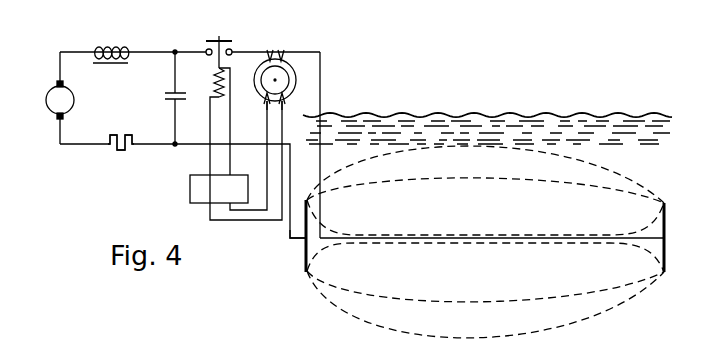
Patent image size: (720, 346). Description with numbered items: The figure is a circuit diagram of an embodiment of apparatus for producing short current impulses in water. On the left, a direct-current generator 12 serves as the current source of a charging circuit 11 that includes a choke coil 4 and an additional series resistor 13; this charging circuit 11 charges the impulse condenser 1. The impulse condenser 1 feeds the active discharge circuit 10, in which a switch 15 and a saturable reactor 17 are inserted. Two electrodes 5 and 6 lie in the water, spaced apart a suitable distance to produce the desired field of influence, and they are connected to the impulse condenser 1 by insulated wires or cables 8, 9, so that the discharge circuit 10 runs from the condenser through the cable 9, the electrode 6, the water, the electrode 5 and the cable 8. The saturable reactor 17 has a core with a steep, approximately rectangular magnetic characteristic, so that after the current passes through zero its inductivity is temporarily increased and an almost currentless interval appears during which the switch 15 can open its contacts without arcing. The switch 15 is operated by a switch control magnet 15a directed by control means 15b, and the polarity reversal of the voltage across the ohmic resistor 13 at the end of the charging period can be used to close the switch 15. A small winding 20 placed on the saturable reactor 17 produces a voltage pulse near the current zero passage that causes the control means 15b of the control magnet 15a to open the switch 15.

The impulse condenser 1 is at (165, 97).
The choke coil 4 is at (126, 45).
The electrode 5 is at (305, 256).
The electrode 6 is at (675, 212).
The insulated wire or cable 8 is at (288, 224).
The insulated wire or cable 9 is at (453, 238).
The condenser discharge circuit 10 is at (316, 176).
The charging circuit 11 is at (119, 111).
The direct-current generator 12 is at (55, 105).
The series resistor 13 is at (120, 151).
The switch 15 is at (220, 38).
The switch control magnet 15a is at (212, 78).
The control means 15b is at (190, 189).
The saturable reactor 17 is at (288, 63).
The small winding 20 is at (267, 101).